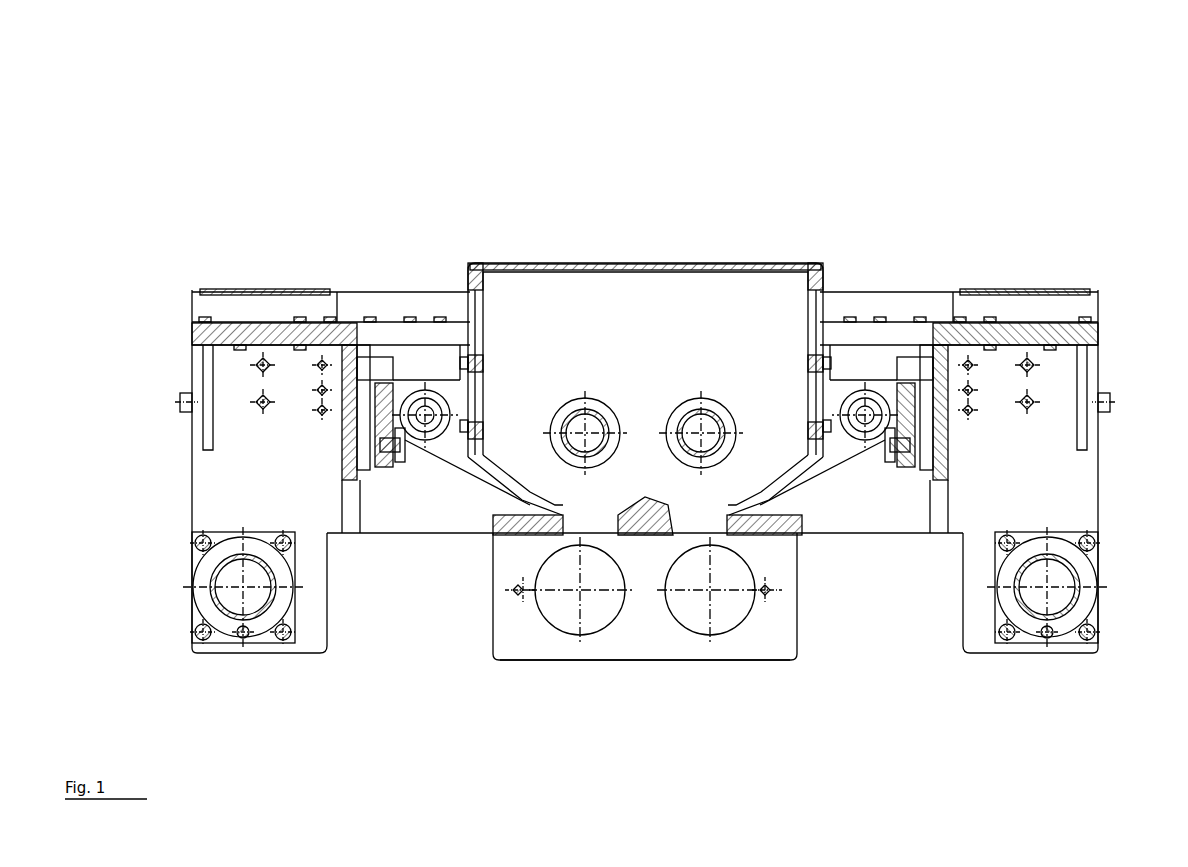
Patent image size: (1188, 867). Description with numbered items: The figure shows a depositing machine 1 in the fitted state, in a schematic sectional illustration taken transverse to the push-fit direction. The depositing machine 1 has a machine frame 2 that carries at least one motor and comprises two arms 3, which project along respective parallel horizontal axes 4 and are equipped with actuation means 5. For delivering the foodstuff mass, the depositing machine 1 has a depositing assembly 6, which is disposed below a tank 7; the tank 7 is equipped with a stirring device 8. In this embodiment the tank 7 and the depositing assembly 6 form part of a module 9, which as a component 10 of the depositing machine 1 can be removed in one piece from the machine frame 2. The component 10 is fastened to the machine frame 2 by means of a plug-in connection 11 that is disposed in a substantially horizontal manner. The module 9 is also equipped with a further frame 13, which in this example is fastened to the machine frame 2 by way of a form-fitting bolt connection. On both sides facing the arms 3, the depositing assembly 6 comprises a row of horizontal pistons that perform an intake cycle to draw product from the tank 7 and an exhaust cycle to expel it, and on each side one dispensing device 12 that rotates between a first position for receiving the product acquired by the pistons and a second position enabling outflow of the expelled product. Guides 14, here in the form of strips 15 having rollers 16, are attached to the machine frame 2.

The depositing machine 1 is at (178, 208).
The machine frame 2 is at (300, 390).
The arms 3 is at (272, 455).
The horizontal axes 4 is at (243, 587).
The actuation means 5 is at (202, 632).
The depositing assembly 6 is at (522, 635).
The tank 7 is at (717, 380).
The stirring device 8 is at (600, 400).
The module 9 is at (740, 690).
The component 10 is at (483, 612).
The plug-in connection 11 is at (430, 470).
The dispensing device 12 is at (572, 620).
The further frame 13 is at (405, 445).
The guides 14 is at (908, 485).
The strips 15 is at (935, 482).
The rollers 16 is at (888, 430).